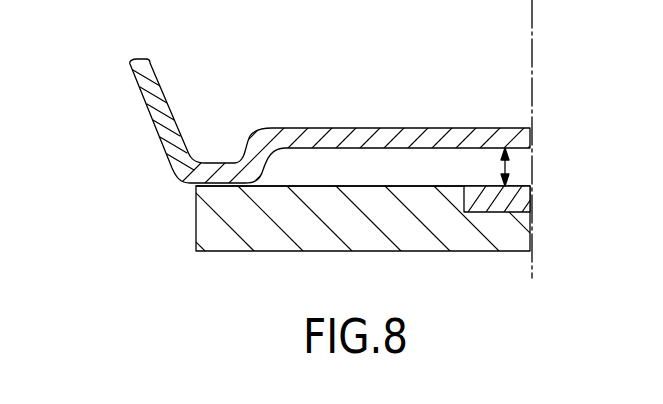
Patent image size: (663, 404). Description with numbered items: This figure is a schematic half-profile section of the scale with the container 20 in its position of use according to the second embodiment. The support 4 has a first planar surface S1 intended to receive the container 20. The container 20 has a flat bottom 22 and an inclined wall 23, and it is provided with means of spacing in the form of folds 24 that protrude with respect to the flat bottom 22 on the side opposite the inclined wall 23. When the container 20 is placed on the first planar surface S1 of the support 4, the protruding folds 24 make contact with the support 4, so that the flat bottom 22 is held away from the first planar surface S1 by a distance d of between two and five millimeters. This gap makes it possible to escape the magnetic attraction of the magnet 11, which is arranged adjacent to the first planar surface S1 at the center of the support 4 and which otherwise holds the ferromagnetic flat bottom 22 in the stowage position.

The container 20 is at (293, 118).
The inclined wall 23 is at (148, 110).
The folds 24 is at (190, 181).
The flat bottom 22 is at (423, 128).
The first planar surface S1 is at (353, 185).
The support 4 is at (196, 220).
The magnet 11 is at (502, 199).
The distance d is at (514, 167).